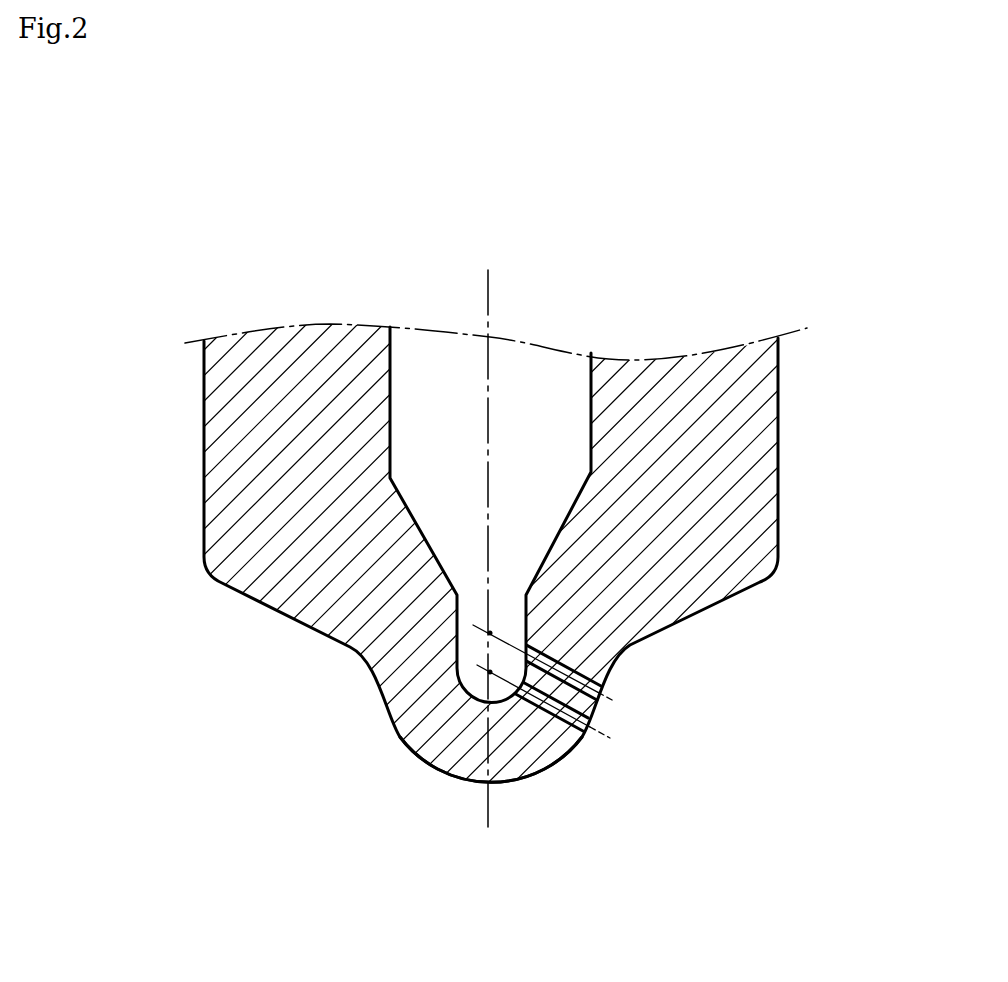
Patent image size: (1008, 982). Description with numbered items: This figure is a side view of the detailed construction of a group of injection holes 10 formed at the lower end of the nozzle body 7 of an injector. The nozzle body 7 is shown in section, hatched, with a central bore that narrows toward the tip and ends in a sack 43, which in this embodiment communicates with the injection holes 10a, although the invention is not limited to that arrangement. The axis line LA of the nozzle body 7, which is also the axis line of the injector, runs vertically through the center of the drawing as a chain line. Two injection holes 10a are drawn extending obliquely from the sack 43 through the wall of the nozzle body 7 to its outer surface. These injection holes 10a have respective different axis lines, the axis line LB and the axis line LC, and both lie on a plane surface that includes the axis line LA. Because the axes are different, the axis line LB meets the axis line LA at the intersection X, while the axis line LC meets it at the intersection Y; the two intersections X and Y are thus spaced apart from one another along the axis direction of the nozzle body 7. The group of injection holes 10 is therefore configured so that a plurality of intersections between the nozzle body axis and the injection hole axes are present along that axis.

The nozzle body 7 is at (780, 438).
The group of injection holes 10 is at (765, 855).
The injection holes 10a is at (602, 682).
The sack 43 is at (458, 622).
The axis line LA is at (488, 270).
The axis line LB is at (607, 688).
The axis line LC is at (592, 732).
The intersection X is at (490, 633).
The intersection Y is at (490, 672).